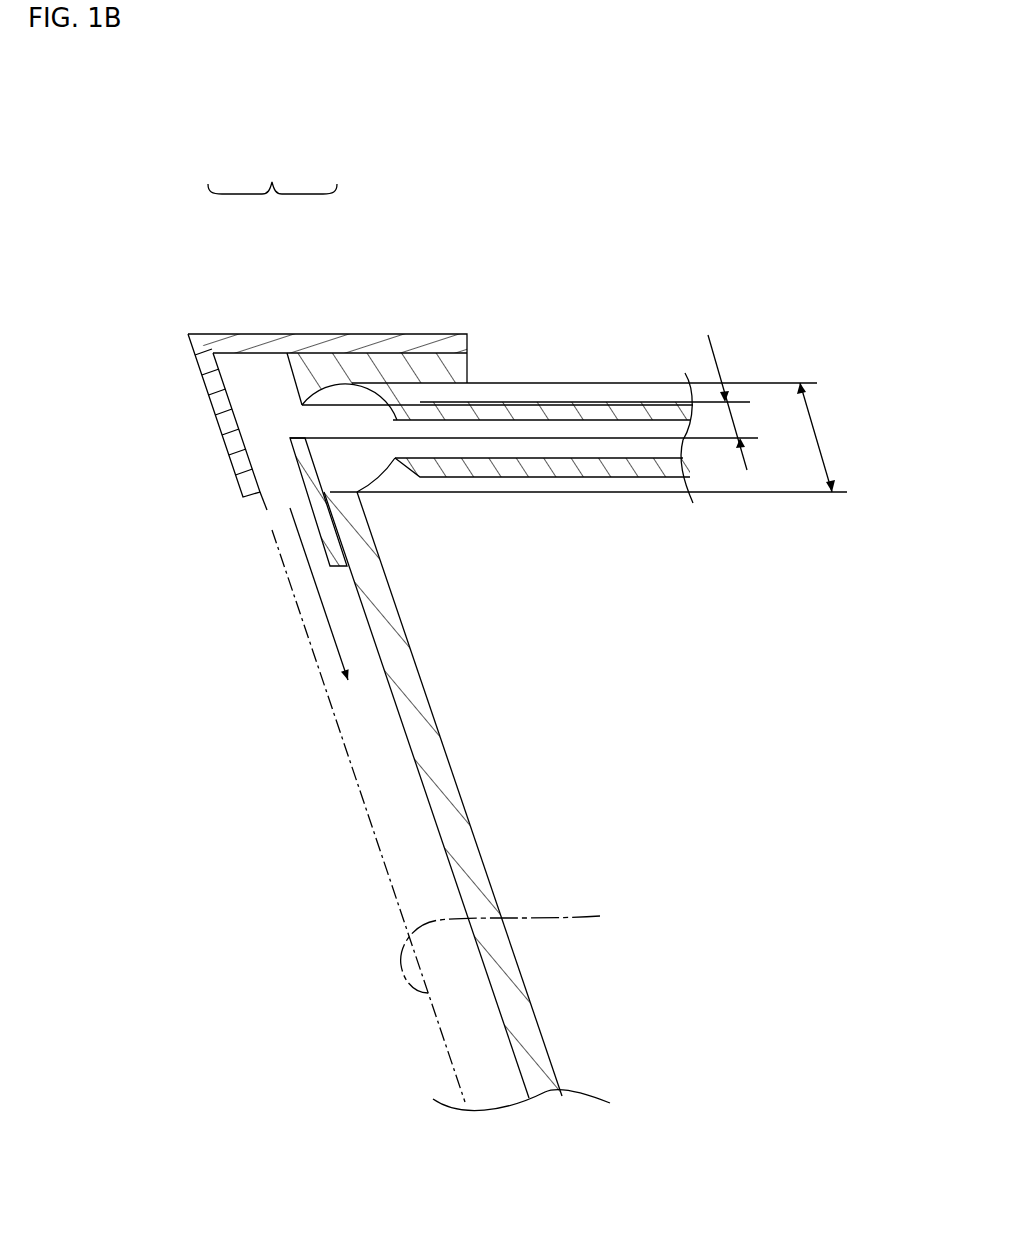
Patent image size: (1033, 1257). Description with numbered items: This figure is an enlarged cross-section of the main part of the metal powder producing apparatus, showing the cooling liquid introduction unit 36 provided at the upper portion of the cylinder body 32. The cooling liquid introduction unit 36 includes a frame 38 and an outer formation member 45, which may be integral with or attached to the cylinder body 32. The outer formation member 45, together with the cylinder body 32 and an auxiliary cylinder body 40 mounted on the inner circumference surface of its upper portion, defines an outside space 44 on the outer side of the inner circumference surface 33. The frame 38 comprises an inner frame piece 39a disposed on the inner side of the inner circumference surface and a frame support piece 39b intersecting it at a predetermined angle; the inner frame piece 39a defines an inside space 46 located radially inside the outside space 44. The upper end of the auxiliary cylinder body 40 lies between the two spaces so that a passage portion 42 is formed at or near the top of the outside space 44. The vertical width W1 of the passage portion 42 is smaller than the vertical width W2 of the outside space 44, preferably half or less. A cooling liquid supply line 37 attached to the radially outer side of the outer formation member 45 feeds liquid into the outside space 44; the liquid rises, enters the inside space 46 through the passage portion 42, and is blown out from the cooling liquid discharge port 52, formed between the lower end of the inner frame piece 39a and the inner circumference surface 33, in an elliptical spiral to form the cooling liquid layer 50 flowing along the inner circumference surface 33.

The cylinder body 32 is at (528, 1040).
The inner circumference surface 33 is at (438, 829).
The cooling liquid introduction unit 36 is at (440, 256).
The cooling liquid supply line 37 is at (673, 467).
The frame 38 is at (272, 172).
The inner frame piece 39a is at (196, 379).
The frame support piece 39b is at (318, 342).
The auxiliary cylinder body 40 is at (287, 440).
The passage portion 42 is at (303, 420).
The outside space 44 is at (372, 455).
The outer formation member 45 is at (373, 520).
The inside space 46 is at (258, 363).
The cooling liquid layer 50 is at (600, 916).
The cooling liquid discharge port 52 is at (283, 483).
The vertical width of the passage portion W1 is at (732, 402).
The vertical width of the outside space W2 is at (828, 437).